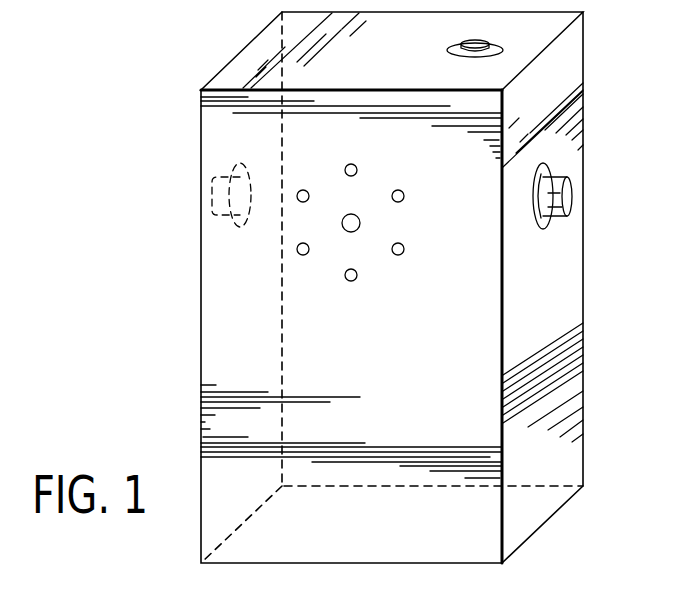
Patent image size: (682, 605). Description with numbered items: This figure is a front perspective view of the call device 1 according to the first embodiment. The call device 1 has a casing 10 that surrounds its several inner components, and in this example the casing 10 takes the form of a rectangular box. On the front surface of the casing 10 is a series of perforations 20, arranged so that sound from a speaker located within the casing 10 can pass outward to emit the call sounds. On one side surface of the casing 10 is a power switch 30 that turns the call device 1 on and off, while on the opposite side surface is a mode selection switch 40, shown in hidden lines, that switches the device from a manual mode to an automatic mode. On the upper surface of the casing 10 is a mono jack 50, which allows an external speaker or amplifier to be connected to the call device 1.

The call device 1 is at (186, 53).
The casing 10 is at (572, 67).
The perforations 20 is at (357, 278).
The power switch 30 is at (564, 180).
The mode selection switch 40 is at (214, 178).
The mono jack 50 is at (470, 44).